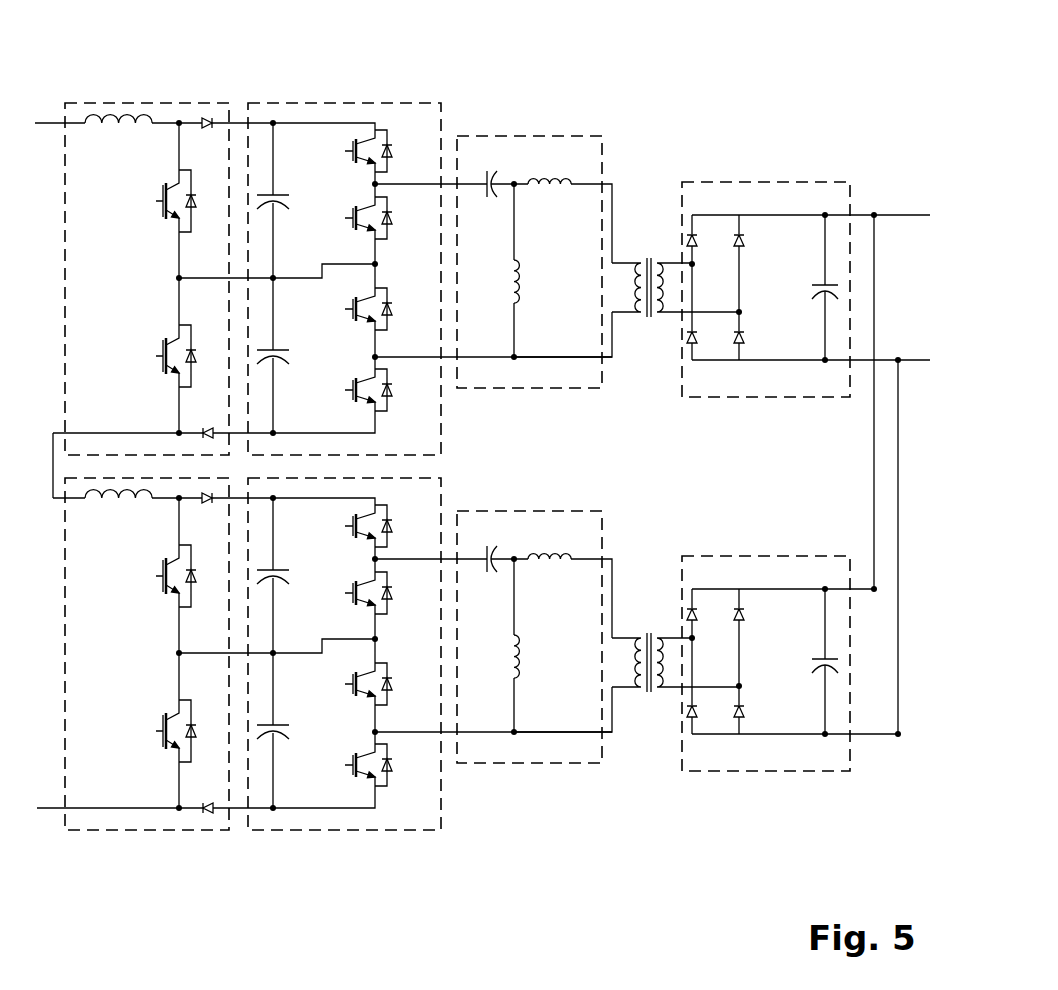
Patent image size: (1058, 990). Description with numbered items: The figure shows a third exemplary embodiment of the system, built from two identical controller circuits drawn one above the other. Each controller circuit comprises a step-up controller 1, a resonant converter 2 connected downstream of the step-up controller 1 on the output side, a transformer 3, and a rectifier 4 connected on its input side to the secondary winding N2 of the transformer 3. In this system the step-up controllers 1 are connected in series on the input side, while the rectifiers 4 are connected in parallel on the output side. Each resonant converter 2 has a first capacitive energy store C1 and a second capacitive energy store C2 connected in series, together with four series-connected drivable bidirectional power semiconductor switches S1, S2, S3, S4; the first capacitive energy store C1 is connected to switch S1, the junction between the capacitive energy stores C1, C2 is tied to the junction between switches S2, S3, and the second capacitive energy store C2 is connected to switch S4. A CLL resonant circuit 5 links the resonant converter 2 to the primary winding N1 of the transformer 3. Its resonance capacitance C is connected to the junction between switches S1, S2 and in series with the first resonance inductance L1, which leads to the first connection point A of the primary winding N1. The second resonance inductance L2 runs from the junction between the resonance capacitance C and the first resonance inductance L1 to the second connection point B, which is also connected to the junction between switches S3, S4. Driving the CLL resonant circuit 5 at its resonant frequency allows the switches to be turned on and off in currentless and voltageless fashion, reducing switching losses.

The step-up controller 1 is at (122, 102).
The resonant converter 2 is at (310, 471).
The transformer 3 is at (662, 471).
The rectifier 4 is at (759, 181).
The CLL resonant circuit 5 is at (493, 471).
The first drivable bidirectional power semiconductor switch S1 is at (385, 338).
The second drivable bidirectional power semiconductor switch S2 is at (385, 405).
The third drivable bidirectional power semiconductor switch S3 is at (385, 496).
The fourth drivable bidirectional power semiconductor switch S4 is at (385, 577).
The first capacitive energy store C1 is at (280, 374).
The second capacitive energy store C2 is at (280, 531).
The resonance capacitance C is at (492, 360).
The first resonance inductance L1 is at (549, 353).
The second resonance inductance L2 is at (534, 469).
The first connection point A is at (591, 393).
The second connection point B is at (563, 531).
The primary winding N1 is at (631, 489).
The secondary winding N2 is at (693, 461).